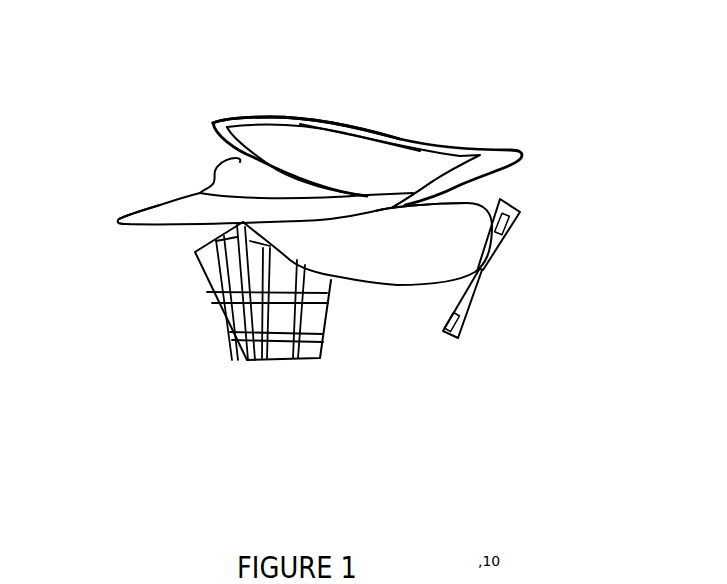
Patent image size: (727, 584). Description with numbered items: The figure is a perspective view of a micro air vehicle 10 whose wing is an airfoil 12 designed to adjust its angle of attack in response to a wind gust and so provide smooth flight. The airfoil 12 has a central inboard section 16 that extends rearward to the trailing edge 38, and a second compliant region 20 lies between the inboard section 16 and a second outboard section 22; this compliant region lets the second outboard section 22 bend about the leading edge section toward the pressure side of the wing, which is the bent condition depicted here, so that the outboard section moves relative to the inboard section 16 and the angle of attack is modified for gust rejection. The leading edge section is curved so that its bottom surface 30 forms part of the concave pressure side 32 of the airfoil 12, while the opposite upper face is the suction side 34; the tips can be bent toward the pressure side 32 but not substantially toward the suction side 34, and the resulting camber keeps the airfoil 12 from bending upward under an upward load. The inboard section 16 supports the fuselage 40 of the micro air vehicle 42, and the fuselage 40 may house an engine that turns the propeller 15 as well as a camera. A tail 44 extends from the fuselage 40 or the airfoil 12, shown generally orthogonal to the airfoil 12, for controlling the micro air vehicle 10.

The micro air vehicle 10 is at (550, 187).
The airfoil 12 is at (413, 137).
The propeller 15 is at (460, 336).
The inboard section 16 is at (165, 200).
The second compliant region 20 is at (212, 186).
The second outboard section 22 is at (317, 118).
The bottom surface 30 is at (415, 167).
The pressure side 32 is at (362, 171).
The suction side 34 is at (355, 128).
The trailing edge 38 is at (252, 118).
The fuselage 40 is at (402, 285).
The micro air vehicle 42 is at (501, 290).
The tail 44 is at (223, 315).